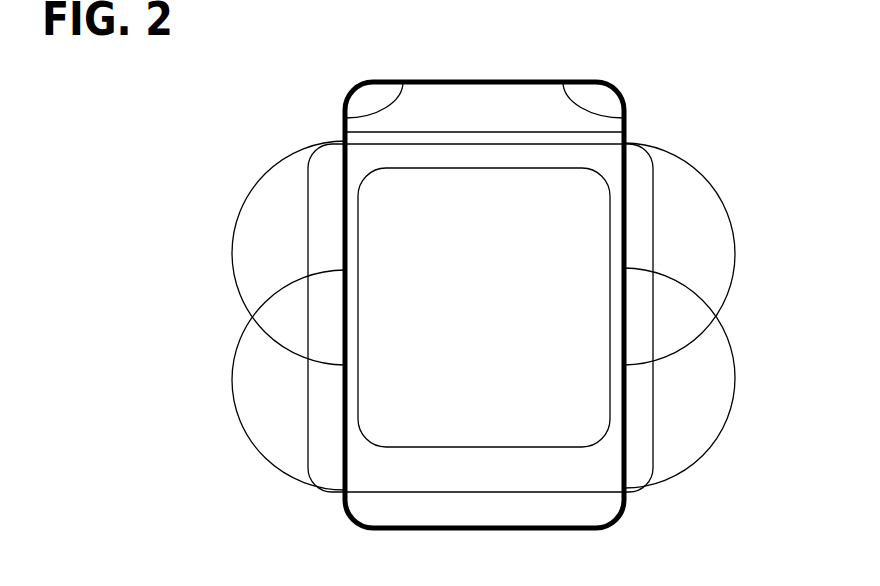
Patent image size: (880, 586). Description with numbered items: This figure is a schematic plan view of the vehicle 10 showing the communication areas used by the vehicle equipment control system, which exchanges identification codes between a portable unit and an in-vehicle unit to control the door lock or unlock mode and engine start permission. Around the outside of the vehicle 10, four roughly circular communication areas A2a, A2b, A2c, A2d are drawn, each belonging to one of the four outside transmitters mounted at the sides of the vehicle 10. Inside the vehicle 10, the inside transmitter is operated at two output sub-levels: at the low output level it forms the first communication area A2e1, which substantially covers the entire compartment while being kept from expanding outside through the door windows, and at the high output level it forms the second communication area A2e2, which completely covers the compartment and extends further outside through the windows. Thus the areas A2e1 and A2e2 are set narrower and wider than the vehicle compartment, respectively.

The vehicle 10 is at (587, 75).
The communication area A2a is at (680, 193).
The communication area A2b is at (712, 380).
The communication area A2c is at (270, 213).
The communication area A2d is at (262, 382).
The first communication area A2e1 is at (408, 203).
The second communication area A2e2 is at (490, 153).